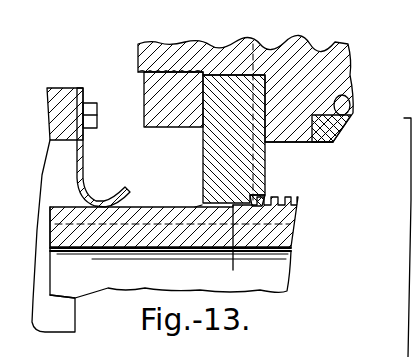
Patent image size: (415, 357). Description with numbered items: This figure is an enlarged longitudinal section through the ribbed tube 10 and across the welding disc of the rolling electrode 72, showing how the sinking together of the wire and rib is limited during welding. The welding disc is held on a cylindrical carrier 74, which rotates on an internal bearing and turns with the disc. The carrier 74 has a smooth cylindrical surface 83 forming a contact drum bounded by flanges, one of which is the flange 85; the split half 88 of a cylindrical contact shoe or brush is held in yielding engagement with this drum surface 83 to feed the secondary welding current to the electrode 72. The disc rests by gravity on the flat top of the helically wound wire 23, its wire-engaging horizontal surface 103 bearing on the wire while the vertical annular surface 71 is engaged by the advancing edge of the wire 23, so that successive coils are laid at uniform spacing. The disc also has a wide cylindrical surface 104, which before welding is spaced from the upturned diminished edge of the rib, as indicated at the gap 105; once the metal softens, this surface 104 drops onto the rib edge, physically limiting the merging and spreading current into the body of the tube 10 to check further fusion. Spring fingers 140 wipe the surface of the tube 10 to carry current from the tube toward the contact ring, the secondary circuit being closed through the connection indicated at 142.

The electrode 72 is at (143, 48).
The vertical annular surface 71 is at (250, 199).
The wire-engaging horizontal surface 103 is at (263, 193).
The flange 85 is at (297, 142).
The cylindrical carrier 74 is at (334, 141).
The cylindrical surface 83 is at (350, 97).
The contact shoe half 88 is at (325, 142).
The spring fingers 140 is at (112, 182).
The space 105 is at (202, 205).
The wire 23 is at (299, 203).
The cylindrical surface 104 is at (243, 246).
The tube 10 is at (278, 267).
The secondary circuit terminal 142 is at (408, 340).